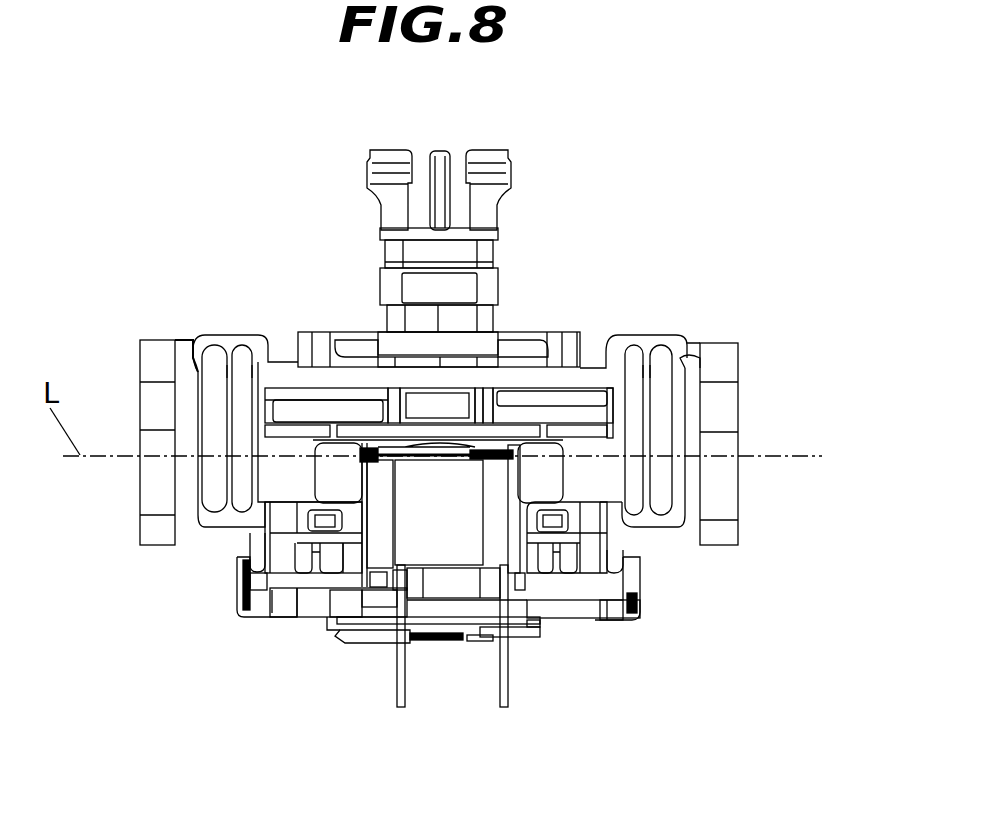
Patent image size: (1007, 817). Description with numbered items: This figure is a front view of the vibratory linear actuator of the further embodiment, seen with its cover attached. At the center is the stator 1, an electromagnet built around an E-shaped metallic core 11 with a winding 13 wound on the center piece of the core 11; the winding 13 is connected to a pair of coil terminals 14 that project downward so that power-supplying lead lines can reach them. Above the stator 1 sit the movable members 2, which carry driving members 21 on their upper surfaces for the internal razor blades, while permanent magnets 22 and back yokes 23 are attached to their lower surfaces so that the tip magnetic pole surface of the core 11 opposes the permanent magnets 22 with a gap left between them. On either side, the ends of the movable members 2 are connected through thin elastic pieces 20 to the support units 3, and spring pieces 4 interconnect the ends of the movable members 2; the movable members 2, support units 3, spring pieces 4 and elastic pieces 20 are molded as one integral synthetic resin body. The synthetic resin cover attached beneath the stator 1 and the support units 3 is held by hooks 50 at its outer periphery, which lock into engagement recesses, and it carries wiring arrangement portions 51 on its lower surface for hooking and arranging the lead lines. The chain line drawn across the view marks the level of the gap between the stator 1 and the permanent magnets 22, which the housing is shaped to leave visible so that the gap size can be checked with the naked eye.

The stator 1 is at (461, 478).
The movable member 2 is at (687, 343).
The support unit 3 is at (232, 524).
The spring piece 4 is at (726, 352).
The core 11 is at (543, 463).
The winding 13 is at (408, 487).
The coil terminal 14 is at (405, 690).
The thin elastic piece 20 is at (787, 383).
The driving member 21 is at (491, 152).
The permanent magnet 22 is at (455, 437).
The back yoke 23 is at (298, 410).
The hook 50 is at (592, 513).
The wiring arrangement portion 51 is at (375, 634).